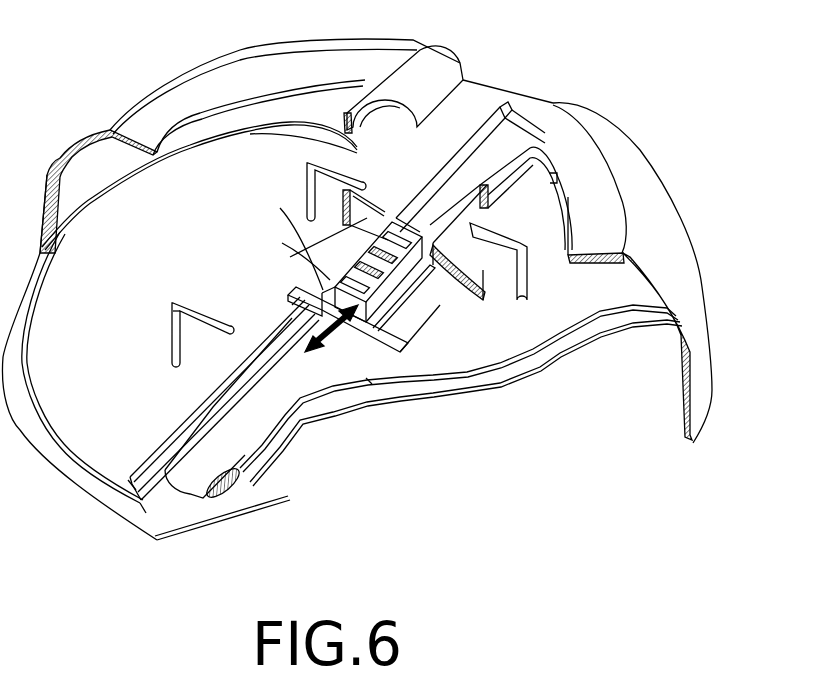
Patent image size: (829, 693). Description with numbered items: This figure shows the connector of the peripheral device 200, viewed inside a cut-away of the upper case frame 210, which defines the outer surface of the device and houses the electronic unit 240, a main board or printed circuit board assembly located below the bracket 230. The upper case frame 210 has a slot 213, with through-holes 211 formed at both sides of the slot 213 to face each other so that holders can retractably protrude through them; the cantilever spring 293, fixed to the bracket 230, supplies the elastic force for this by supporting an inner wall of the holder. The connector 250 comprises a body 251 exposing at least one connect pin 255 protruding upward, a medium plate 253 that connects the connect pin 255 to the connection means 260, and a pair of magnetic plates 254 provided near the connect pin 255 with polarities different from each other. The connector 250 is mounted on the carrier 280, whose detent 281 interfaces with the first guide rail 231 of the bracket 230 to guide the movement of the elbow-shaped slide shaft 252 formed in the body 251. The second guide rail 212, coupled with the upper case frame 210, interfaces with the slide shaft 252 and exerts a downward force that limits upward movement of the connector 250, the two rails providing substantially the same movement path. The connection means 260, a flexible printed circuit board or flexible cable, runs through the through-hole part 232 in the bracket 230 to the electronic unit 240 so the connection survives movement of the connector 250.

The peripheral device 200 is at (656, 127).
The upper case frame 210 is at (704, 346).
The through-holes 211 is at (310, 143).
The second guide rail 212 is at (480, 275).
The slot 213 is at (433, 88).
The bracket 230 is at (480, 380).
The first guide rail 231 is at (128, 483).
The through-hole part 232 is at (238, 495).
The electronic unit 240 is at (607, 340).
The connector 250 is at (507, 110).
The body 251 is at (357, 268).
The elbow-shaped slide shaft 252 is at (330, 300).
The medium plate 253 is at (413, 324).
The magnetic plates 254 is at (398, 228).
The connect pin 255 is at (433, 295).
The connection means 260 is at (184, 488).
The carrier 280 is at (291, 299).
The detent 281 is at (293, 315).
The cantilever spring 293 is at (172, 318).